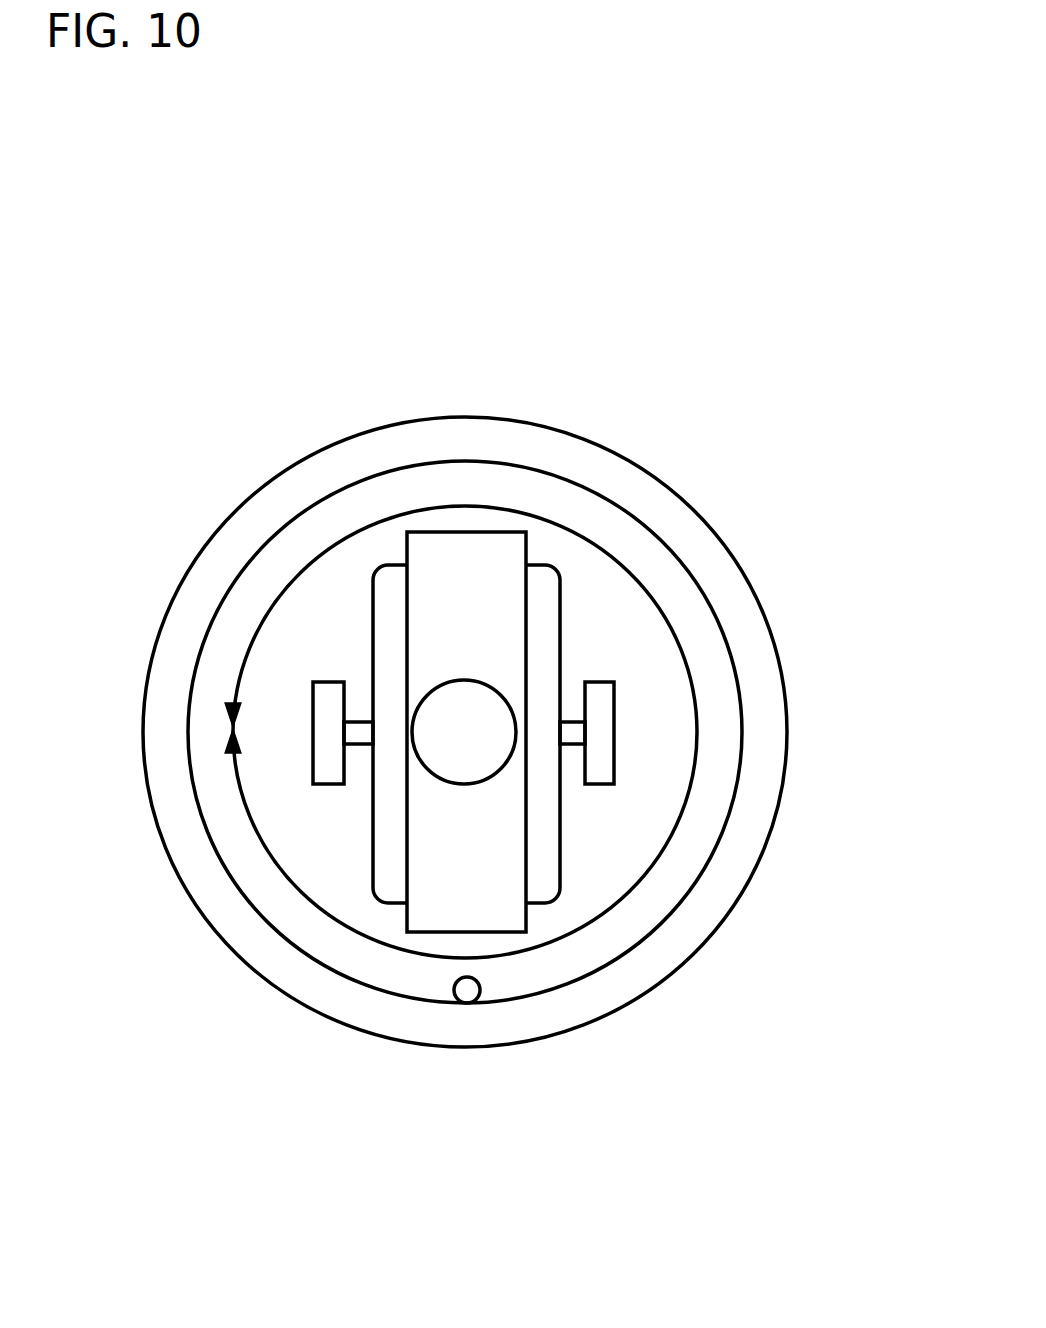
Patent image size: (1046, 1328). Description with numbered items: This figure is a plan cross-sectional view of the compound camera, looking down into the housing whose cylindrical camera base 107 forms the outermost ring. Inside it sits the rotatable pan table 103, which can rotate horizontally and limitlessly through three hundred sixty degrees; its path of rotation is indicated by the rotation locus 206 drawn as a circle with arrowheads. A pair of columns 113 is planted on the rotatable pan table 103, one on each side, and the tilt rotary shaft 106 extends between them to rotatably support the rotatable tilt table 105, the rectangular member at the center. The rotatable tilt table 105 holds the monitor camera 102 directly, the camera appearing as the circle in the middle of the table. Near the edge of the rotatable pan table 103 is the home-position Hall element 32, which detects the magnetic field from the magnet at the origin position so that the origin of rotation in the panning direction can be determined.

The home-position Hall element 32 is at (467, 990).
The monitor camera 102 is at (483, 667).
The rotatable pan table 103 is at (634, 975).
The rotatable tilt table 105 is at (465, 545).
The tilt rotary shaft 106 is at (581, 705).
The camera base 107 is at (300, 1025).
The columns 113 is at (313, 690).
The rotation locus 206 is at (682, 856).